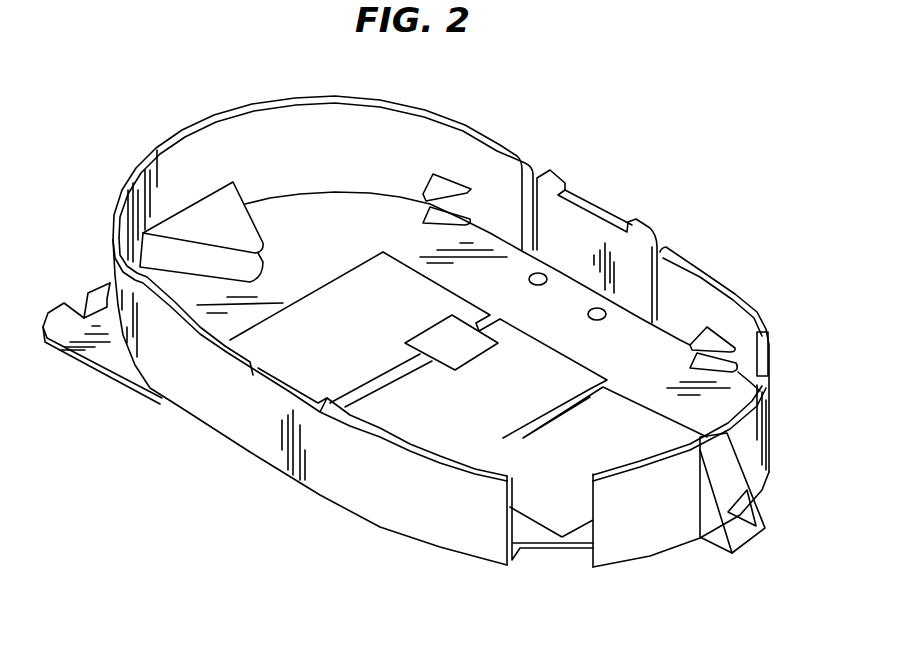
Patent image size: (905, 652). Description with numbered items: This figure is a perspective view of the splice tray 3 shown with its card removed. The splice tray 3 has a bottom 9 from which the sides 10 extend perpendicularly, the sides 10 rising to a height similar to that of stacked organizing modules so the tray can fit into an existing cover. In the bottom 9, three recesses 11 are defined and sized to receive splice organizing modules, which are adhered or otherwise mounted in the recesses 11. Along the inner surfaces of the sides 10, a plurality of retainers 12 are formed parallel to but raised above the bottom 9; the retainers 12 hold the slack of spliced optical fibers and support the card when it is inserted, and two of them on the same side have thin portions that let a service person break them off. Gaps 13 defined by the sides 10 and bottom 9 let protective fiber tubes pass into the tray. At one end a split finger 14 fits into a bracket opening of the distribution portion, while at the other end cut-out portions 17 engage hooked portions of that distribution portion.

The splice tray 3 is at (190, 76).
The bottom 9 is at (366, 210).
The sides 10 is at (412, 108).
The recesses 11 is at (333, 296).
The retainers 12 is at (182, 213).
The gaps 13 is at (552, 568).
The split finger 14 is at (742, 550).
The cut-out portions 17 is at (80, 304).